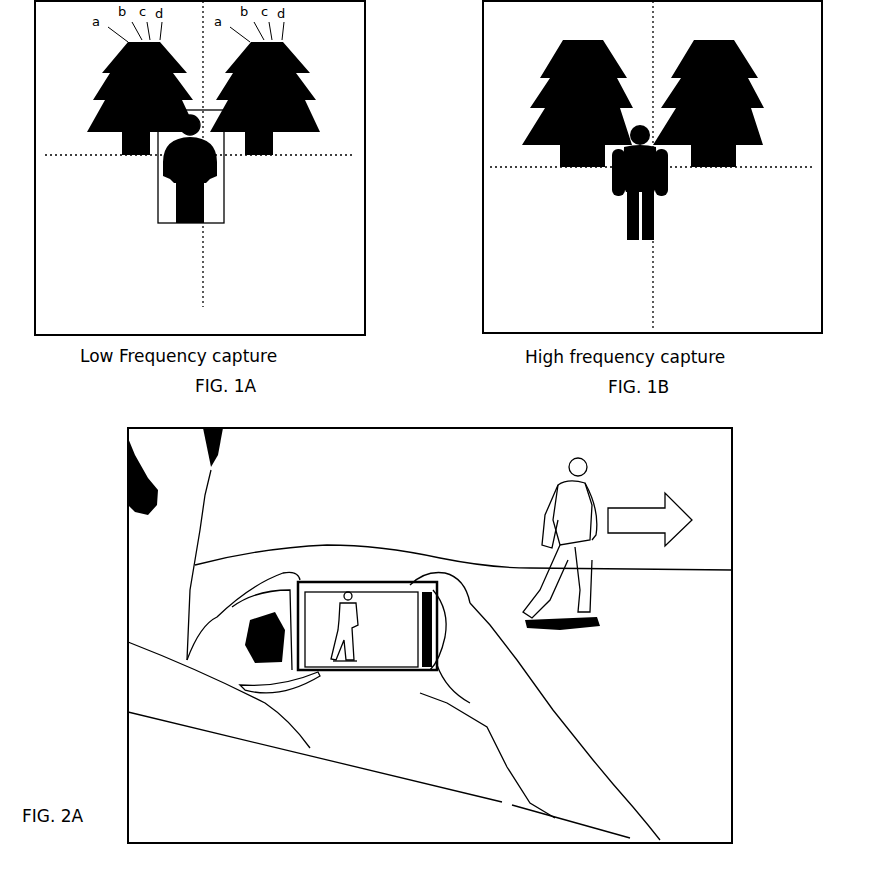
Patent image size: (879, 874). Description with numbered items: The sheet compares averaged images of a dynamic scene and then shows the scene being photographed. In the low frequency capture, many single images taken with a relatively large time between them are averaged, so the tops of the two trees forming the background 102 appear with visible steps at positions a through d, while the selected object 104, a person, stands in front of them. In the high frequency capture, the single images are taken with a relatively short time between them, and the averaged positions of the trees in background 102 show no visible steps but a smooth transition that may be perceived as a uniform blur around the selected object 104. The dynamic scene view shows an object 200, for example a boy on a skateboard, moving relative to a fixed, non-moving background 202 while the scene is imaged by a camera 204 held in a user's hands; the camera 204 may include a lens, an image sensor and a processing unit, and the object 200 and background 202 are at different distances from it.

In FIG. 1A, the background 102 is at (122, 163).
In FIG. 1B, the background 102 is at (573, 187).
In FIG. 1A, the selected object 104 is at (203, 210).
In FIG. 1B, the selected object 104 is at (662, 232).
In FIG. 2A, the object 200 is at (525, 478).
In FIG. 2A, the background 202 is at (338, 540).
In FIG. 2A, the camera 204 is at (370, 675).